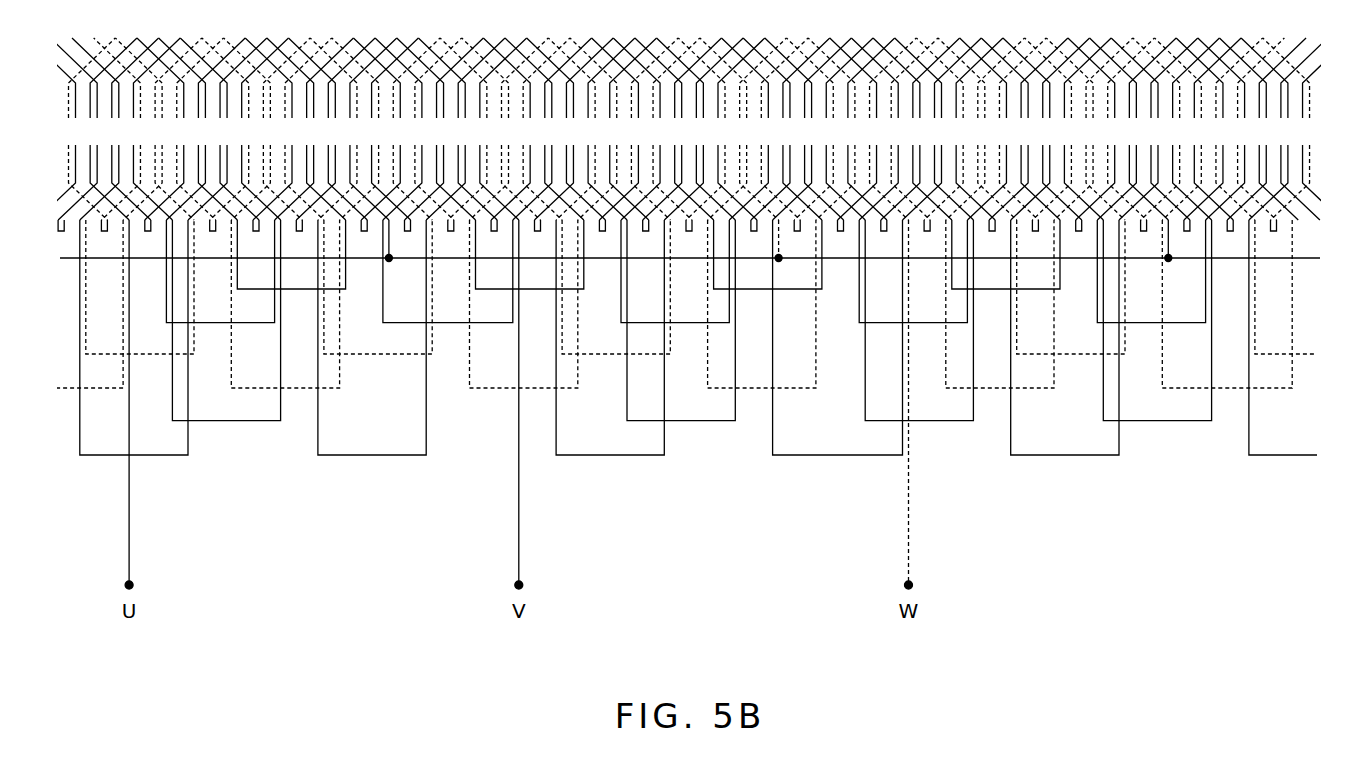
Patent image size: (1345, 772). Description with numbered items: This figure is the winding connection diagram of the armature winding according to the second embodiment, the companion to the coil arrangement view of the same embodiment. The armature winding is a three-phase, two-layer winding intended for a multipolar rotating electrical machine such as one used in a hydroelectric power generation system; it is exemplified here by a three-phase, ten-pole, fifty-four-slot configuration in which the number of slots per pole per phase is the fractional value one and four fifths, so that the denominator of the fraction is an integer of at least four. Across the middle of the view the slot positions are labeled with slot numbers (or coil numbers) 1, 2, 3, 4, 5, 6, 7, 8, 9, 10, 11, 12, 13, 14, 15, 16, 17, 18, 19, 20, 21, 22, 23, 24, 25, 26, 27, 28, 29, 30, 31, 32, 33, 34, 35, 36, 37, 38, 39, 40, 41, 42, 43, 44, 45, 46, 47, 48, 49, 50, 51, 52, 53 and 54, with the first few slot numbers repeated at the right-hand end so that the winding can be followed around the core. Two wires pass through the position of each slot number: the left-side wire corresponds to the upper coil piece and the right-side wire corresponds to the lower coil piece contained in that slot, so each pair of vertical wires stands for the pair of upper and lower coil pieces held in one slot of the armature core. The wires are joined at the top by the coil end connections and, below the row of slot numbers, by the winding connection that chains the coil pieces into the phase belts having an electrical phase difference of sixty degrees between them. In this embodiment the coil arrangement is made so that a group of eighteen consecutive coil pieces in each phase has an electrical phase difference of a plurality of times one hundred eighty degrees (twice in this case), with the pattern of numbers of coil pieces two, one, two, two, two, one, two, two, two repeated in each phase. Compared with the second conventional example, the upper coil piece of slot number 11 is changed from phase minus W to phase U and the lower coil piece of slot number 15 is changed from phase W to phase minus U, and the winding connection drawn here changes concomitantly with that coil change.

The slot 1 is at (678, 129).
The slot 2 is at (700, 129).
The slot 3 is at (719, 129).
The slot 4 is at (158, 129).
The slot 5 is at (180, 129).
The slot 6 is at (202, 129).
The slot 7 is at (223, 129).
The slot 8 is at (245, 129).
The slot 9 is at (267, 129).
The slot 10 is at (288, 129).
The slot 11 is at (310, 129).
The slot 12 is at (332, 129).
The slot 13 is at (353, 129).
The slot 14 is at (375, 129).
The slot 15 is at (396, 129).
The slot 16 is at (418, 129).
The slot 17 is at (440, 129).
The slot 18 is at (461, 129).
The slot 19 is at (483, 129).
The slot 20 is at (505, 129).
The slot 21 is at (526, 129).
The slot 22 is at (548, 129).
The slot 23 is at (570, 129).
The slot 24 is at (591, 129).
The slot 25 is at (613, 129).
The slot 26 is at (635, 129).
The slot 27 is at (656, 129).
The slot 28 is at (678, 129).
The slot 29 is at (700, 129).
The slot 30 is at (721, 129).
The slot 31 is at (743, 129).
The slot 32 is at (765, 129).
The slot 33 is at (786, 129).
The slot 34 is at (808, 129).
The slot 35 is at (829, 129).
The slot 36 is at (851, 129).
The slot 37 is at (873, 129).
The slot 38 is at (894, 129).
The slot 39 is at (916, 129).
The slot 40 is at (938, 129).
The slot 41 is at (959, 129).
The slot 42 is at (981, 129).
The slot 43 is at (1003, 129).
The slot 44 is at (1024, 129).
The slot 45 is at (1046, 129).
The slot 46 is at (1068, 129).
The slot 47 is at (1089, 129).
The slot 48 is at (1111, 129).
The slot 49 is at (1133, 129).
The slot 50 is at (1154, 129).
The slot 51 is at (1176, 129).
The slot 52 is at (1198, 129).
The slot 53 is at (1219, 129).
The slot 54 is at (657, 129).